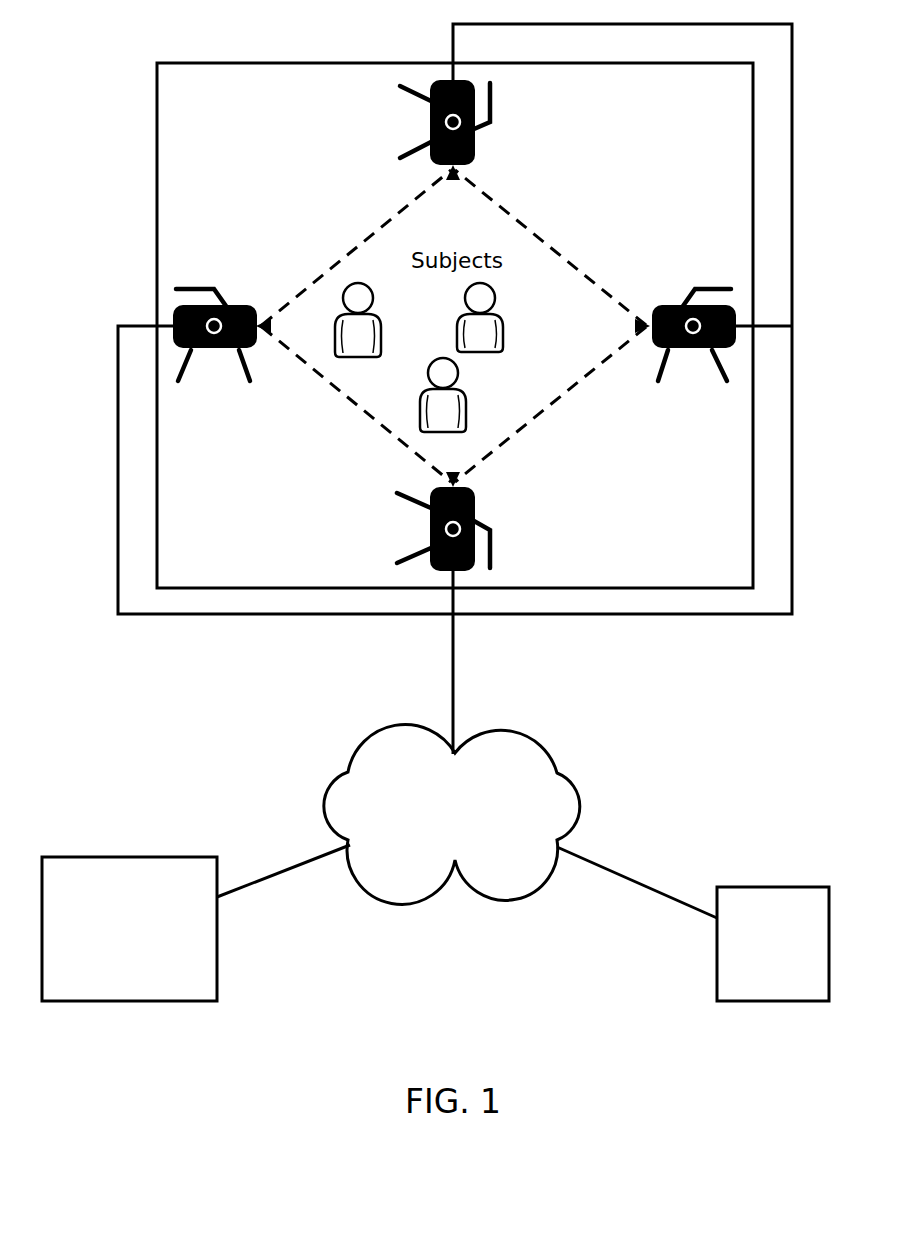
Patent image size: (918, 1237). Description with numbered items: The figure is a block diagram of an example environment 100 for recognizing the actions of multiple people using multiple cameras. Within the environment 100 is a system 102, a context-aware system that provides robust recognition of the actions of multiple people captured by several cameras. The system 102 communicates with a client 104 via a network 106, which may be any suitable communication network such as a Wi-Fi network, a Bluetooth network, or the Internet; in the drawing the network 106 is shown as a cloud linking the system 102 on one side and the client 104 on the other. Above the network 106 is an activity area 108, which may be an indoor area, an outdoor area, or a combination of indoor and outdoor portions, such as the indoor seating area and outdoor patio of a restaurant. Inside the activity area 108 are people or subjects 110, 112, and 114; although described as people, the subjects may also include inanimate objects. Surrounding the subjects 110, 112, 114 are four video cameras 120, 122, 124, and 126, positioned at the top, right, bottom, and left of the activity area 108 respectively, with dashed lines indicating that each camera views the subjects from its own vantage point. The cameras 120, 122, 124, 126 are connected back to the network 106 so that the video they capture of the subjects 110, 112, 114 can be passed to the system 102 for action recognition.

The environment 100 is at (476, 1040).
The system 102 is at (129, 929).
The client 104 is at (773, 944).
The network 106 is at (452, 814).
The activity area 108 is at (455, 325).
The subject 110 is at (381, 322).
The subject 112 is at (503, 313).
The subject 114 is at (466, 402).
The video camera 120 is at (476, 145).
The video camera 122 is at (672, 305).
The video camera 124 is at (476, 504).
The video camera 126 is at (238, 305).